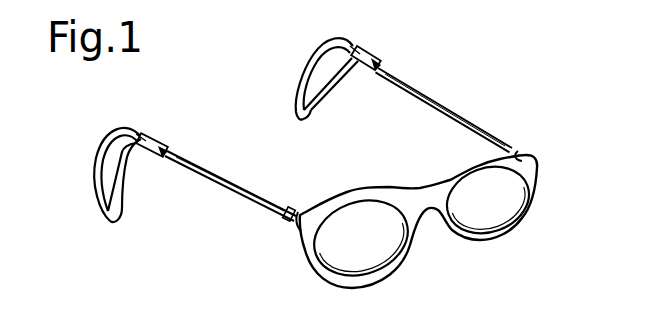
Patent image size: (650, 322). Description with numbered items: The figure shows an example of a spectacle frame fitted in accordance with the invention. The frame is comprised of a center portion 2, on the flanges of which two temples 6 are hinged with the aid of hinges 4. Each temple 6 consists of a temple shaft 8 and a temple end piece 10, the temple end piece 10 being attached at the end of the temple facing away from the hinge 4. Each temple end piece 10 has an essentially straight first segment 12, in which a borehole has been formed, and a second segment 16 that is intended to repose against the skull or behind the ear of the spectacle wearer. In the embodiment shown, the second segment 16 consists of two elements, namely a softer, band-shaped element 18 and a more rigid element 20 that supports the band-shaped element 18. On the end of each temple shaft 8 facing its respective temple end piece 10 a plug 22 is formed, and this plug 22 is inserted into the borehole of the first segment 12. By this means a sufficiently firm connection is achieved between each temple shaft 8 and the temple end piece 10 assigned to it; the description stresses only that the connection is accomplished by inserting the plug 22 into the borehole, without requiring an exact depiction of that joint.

The center portion 2 is at (435, 230).
The hinge 4 is at (297, 240).
The temple 6 is at (237, 206).
The temple shaft 8 is at (212, 176).
The temple end piece 10 is at (247, 140).
The first segment 12 is at (137, 132).
The second segment 16 is at (114, 223).
The band-shaped element 18 is at (119, 192).
The rigid element 20 is at (93, 168).
The plug 22 is at (156, 136).